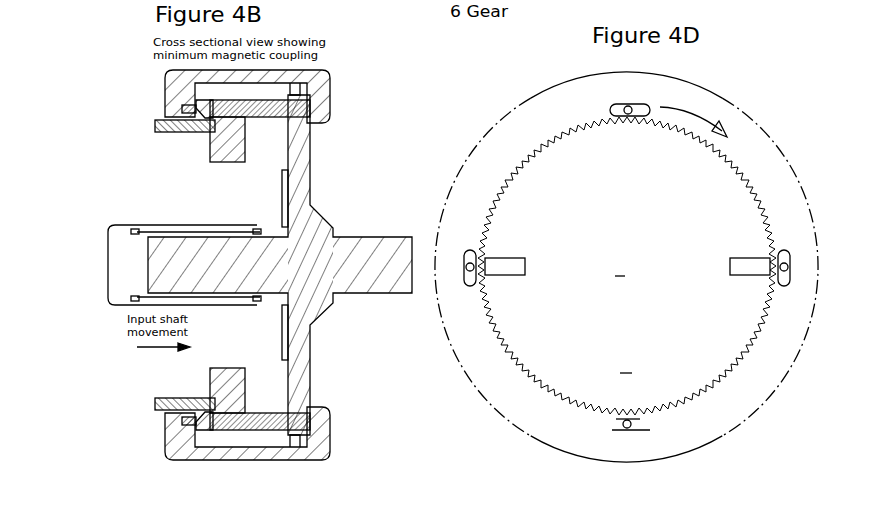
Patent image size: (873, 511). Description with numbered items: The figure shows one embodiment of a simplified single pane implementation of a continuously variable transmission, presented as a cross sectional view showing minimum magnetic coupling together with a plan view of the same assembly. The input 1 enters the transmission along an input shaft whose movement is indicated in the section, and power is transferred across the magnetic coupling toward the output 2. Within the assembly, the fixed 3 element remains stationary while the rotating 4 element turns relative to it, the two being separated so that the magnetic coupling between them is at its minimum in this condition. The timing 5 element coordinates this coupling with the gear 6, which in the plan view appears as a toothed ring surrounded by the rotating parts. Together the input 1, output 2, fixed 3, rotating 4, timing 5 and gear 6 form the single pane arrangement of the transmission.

In FIG. 4B, the input 1 is at (172, 188).
In FIG. 4D, the input 1 is at (590, 318).
In FIG. 4B, the output 2 is at (463, 235).
In FIG. 4B, the fixed 3 is at (228, 152).
In FIG. 4D, the fixed 3 is at (628, 152).
In FIG. 4B, the rotating 4 is at (267, 107).
In FIG. 4D, the rotating 4 is at (613, 108).
In FIG. 4B, the timing 5 is at (200, 101).
In FIG. 4D, the timing 5 is at (470, 275).
In FIG. 4B, the gear 6 is at (197, 101).